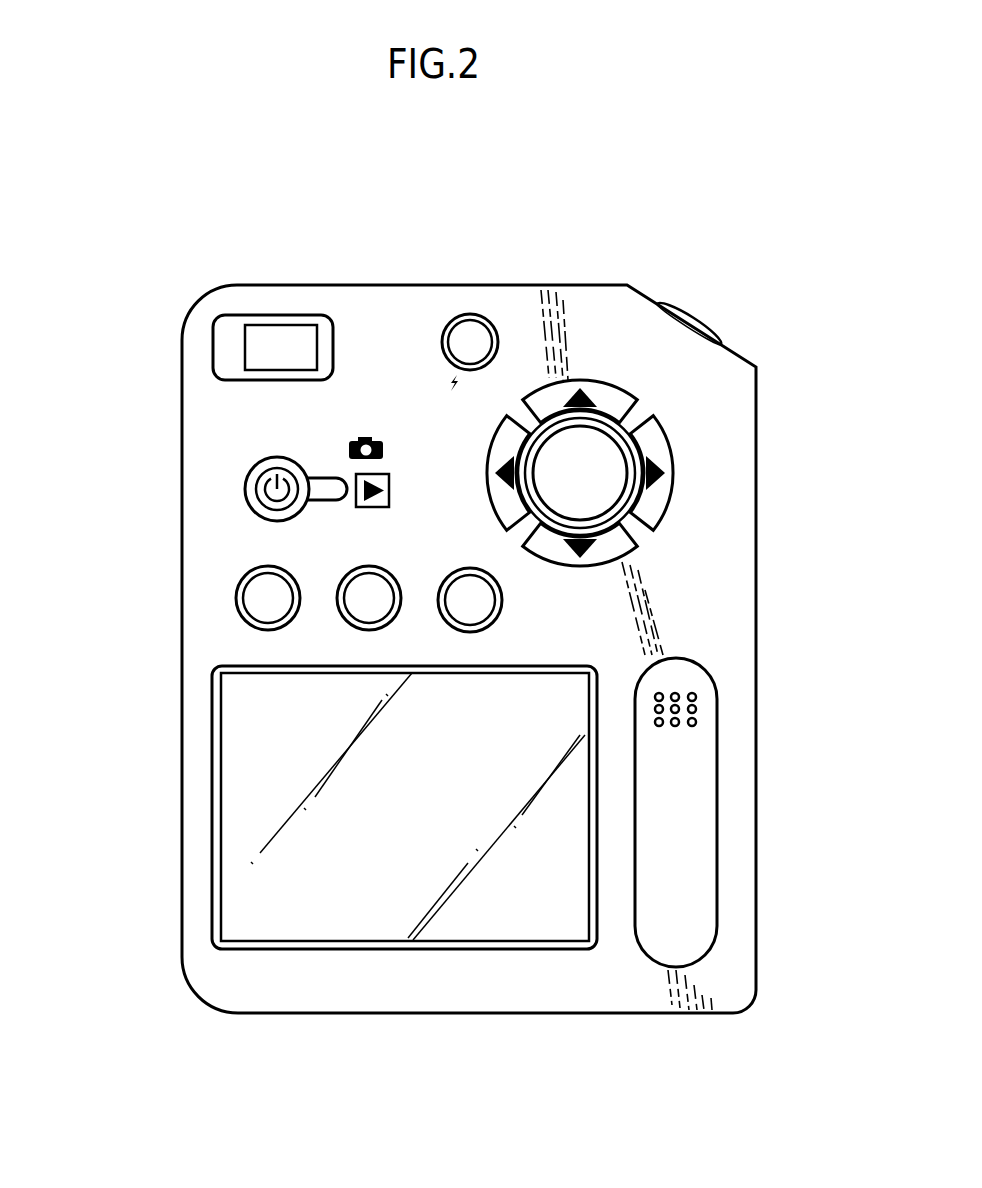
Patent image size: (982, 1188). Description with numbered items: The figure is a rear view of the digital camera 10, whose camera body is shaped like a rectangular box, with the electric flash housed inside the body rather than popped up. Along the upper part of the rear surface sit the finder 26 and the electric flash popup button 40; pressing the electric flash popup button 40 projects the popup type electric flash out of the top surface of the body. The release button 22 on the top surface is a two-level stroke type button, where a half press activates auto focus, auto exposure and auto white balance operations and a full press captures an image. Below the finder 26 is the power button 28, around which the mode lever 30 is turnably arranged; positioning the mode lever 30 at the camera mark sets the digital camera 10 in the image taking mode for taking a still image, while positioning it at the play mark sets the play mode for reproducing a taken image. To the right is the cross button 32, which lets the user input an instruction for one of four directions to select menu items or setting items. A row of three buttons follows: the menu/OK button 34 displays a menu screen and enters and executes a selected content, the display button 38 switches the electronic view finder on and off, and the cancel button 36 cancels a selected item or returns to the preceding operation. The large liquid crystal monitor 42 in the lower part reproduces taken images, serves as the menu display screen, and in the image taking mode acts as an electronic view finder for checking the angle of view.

The digital camera 10 is at (170, 246).
The release button 22 is at (690, 317).
The finder 26 is at (277, 347).
The power button 28 is at (263, 498).
The mode lever 30 is at (327, 490).
The cross button 32 is at (700, 477).
The menu/OK button 34 is at (262, 598).
The cancel button 36 is at (478, 602).
The display button 38 is at (361, 593).
The electric flash popup button 40 is at (467, 340).
The liquid crystal monitor 42 is at (222, 785).